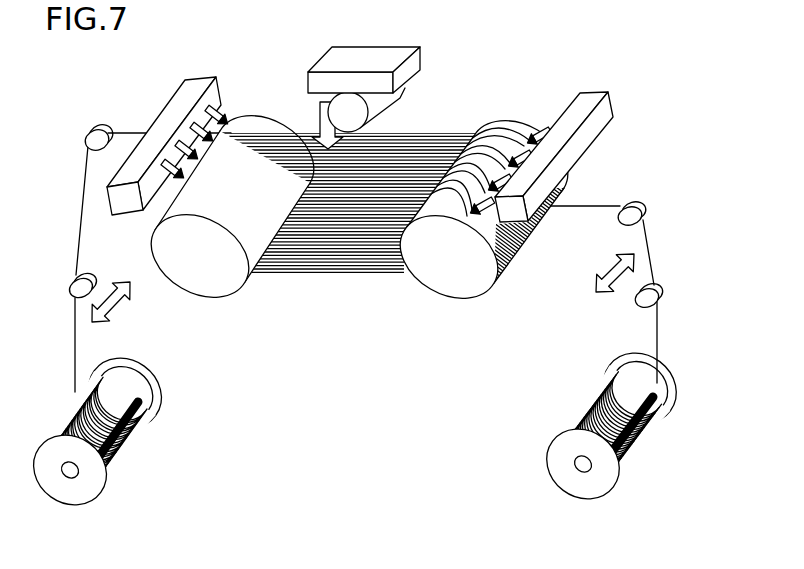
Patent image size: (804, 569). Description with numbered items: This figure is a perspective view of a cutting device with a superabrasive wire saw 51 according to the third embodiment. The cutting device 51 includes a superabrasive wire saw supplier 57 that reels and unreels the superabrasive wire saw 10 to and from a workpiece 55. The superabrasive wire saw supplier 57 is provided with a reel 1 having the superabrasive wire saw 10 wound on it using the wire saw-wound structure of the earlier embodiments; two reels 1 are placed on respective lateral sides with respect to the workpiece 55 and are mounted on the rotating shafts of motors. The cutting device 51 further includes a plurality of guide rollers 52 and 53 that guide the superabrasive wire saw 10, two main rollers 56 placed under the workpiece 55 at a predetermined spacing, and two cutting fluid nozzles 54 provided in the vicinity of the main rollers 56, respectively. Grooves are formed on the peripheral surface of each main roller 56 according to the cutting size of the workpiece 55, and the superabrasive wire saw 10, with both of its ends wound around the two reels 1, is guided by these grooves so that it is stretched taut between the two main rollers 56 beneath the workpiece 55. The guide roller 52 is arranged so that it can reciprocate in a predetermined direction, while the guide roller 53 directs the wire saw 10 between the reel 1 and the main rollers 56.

The reel 1 is at (53, 483).
The superabrasive wire saw 10 is at (342, 276).
The cutting device with a superabrasive wire saw 51 is at (646, 100).
The guide roller 52 is at (78, 296).
The guide roller 53 is at (95, 146).
The cutting fluid nozzle 54 is at (182, 107).
The workpiece 55 is at (383, 99).
The main roller 56 is at (193, 267).
The superabrasive wire saw supplier 57 is at (355, 438).